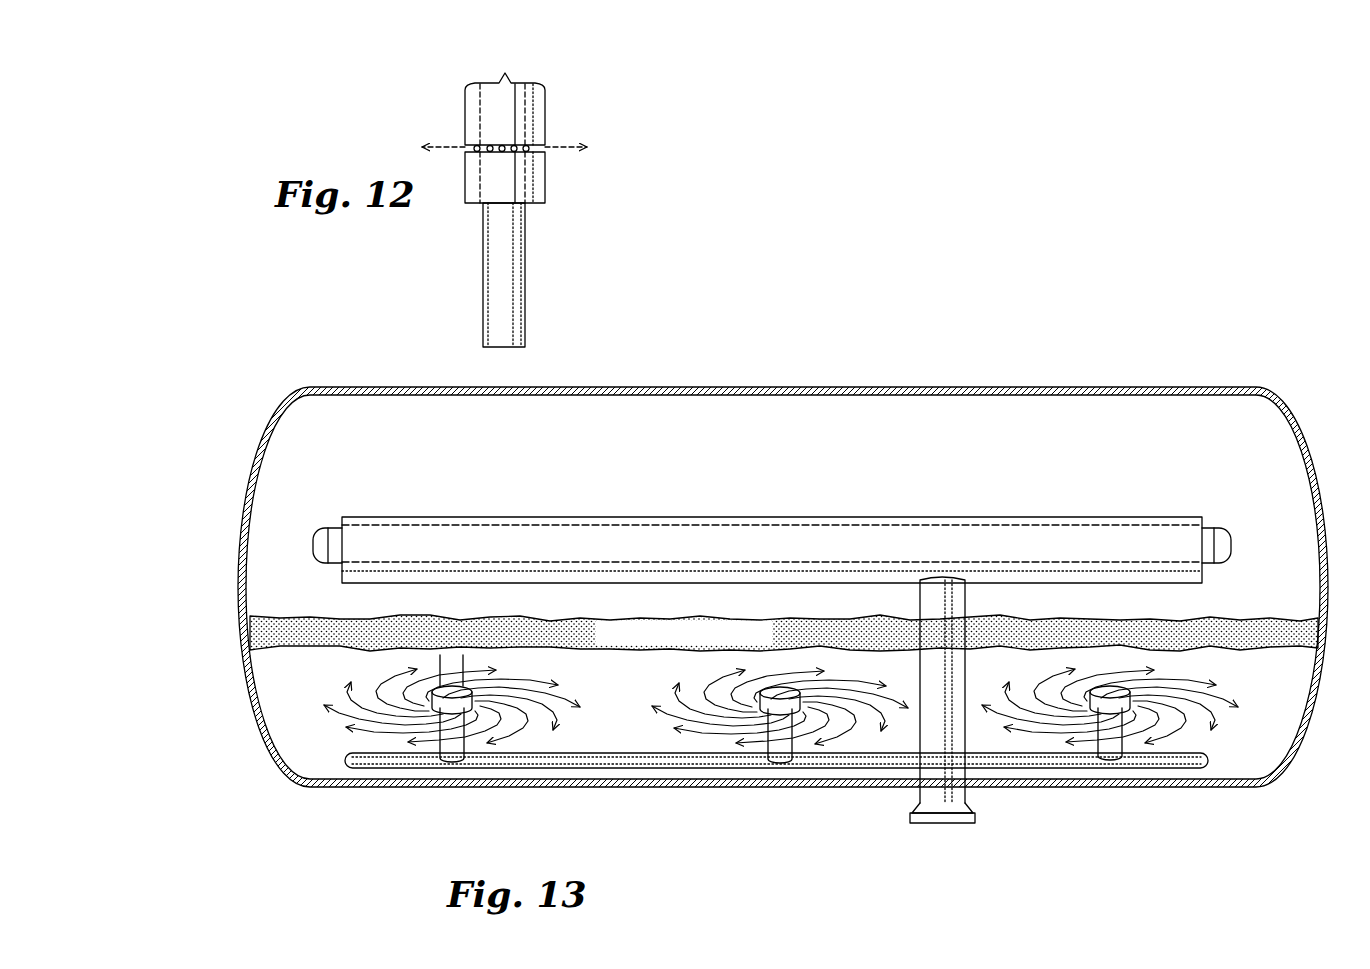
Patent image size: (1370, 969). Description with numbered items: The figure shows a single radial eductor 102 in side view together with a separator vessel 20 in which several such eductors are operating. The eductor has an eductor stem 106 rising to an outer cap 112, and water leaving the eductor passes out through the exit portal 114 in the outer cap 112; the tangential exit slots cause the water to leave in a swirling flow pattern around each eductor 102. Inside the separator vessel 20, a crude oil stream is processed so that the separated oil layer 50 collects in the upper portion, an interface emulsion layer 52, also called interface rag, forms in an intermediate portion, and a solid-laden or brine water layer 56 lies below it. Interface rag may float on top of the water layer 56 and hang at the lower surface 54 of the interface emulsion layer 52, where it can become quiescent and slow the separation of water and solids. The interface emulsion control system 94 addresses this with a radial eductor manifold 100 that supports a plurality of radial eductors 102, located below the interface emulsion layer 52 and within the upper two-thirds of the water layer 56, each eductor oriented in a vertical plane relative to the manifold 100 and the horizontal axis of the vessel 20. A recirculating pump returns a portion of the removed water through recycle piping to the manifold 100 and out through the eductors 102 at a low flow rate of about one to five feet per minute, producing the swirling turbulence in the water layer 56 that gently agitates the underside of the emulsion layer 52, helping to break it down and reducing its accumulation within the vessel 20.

In FIG. 13, the separator vessel 20 is at (1072, 387).
In FIG. 13, the oil layer 50 is at (432, 467).
In FIG. 13, the interface emulsion layer 52 is at (1266, 623).
In FIG. 13, the lower surface of the interface emulsion layer 54 is at (1273, 650).
In FIG. 13, the water layer 56 is at (610, 688).
In FIG. 13, the interface emulsion control system 94 is at (900, 380).
In FIG. 13, the radial eductor manifold 100 is at (821, 792).
In FIG. 13, the radial eductor 102 is at (1107, 748).
In FIG. 12, the eductor stem 106 is at (507, 277).
In FIG. 12, the outer cap 112 is at (528, 98).
In FIG. 12, the exit portal 114 is at (568, 142).